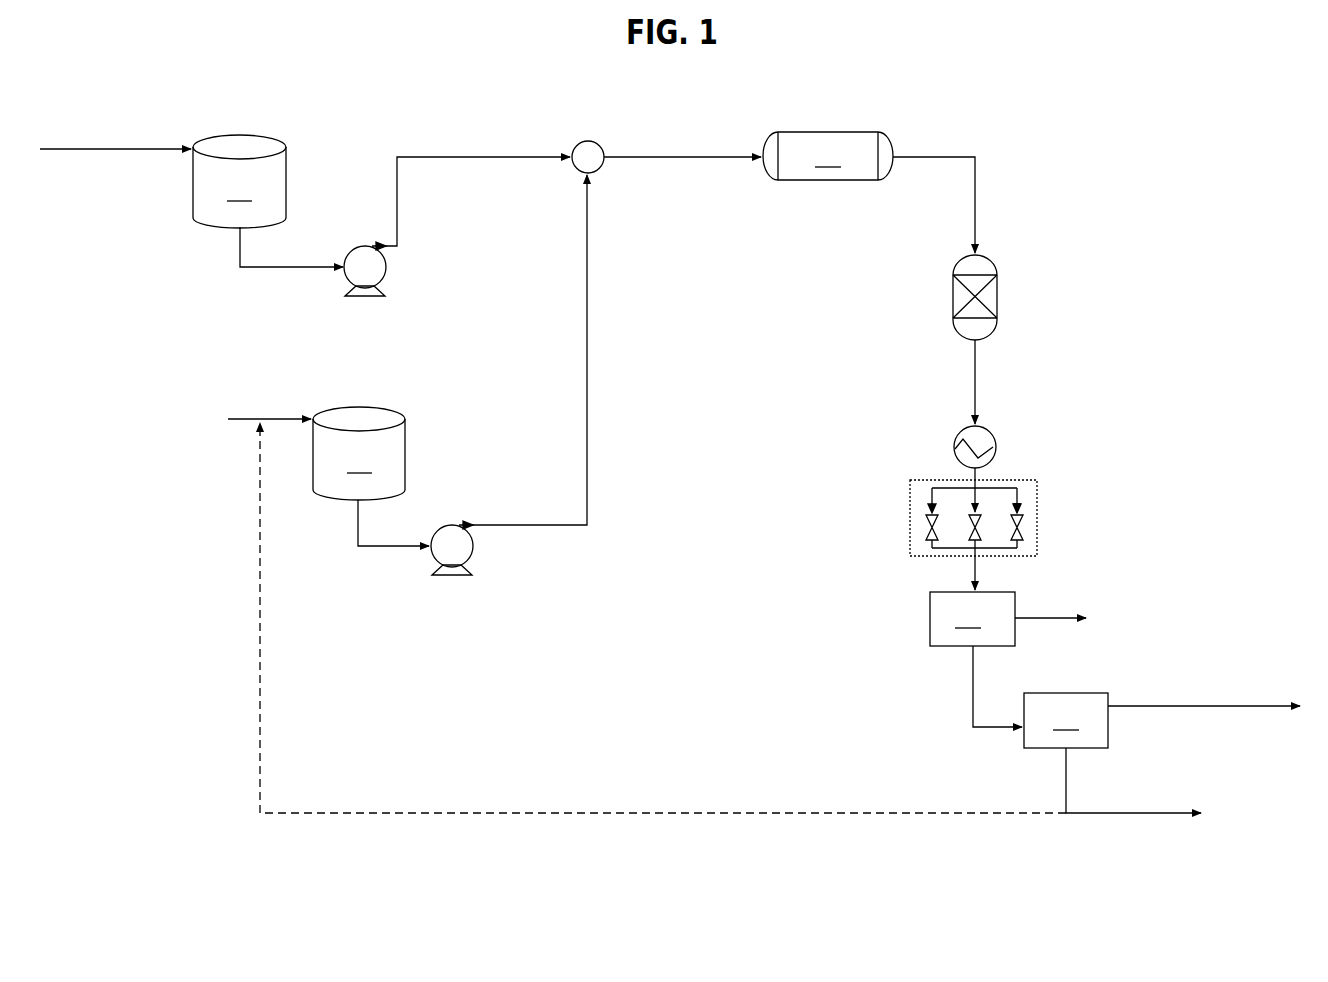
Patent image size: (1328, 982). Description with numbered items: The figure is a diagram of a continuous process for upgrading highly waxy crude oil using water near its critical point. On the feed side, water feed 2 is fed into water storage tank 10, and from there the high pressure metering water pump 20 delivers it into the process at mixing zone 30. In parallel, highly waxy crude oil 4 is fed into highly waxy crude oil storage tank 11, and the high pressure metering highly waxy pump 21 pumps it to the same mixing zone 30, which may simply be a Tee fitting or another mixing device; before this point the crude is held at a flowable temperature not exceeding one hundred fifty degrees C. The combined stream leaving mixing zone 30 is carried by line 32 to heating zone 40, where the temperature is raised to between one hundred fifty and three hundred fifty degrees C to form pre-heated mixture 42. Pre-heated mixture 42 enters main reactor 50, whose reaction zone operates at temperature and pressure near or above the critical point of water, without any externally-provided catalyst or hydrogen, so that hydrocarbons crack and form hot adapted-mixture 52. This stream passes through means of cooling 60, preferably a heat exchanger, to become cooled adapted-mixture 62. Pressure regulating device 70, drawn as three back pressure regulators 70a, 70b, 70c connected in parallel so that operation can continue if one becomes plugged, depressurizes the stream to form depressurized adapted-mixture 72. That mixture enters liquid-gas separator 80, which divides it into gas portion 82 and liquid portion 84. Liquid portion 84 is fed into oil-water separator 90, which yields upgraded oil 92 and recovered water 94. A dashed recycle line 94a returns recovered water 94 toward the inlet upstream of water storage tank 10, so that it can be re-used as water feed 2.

The water feed 2 is at (255, 420).
The highly waxy crude oil 4 is at (137, 149).
The water storage tank 10 is at (359, 453).
The highly waxy crude oil storage tank 11 is at (239, 181).
The high pressure metering water pump 20 is at (473, 547).
The high pressure metering highly waxy pump 21 is at (366, 245).
The mixing zone 30 is at (593, 141).
The mixed stream 32 is at (718, 156).
The heating zone 40 is at (828, 156).
The pre-heated mixture 42 is at (928, 156).
The main reactor 50 is at (953, 266).
The hot adapted-mixture 52 is at (977, 395).
The means of cooling 60 is at (961, 430).
The cooled adapted-mixture 62 is at (978, 472).
The pressure regulating device 70 is at (986, 488).
The back pressure regulator 70a is at (926, 523).
The back pressure regulator 70b is at (981, 524).
The back pressure regulator 70c is at (1024, 524).
The depressurized adapted-mixture 72 is at (973, 573).
The liquid-gas separator 80 is at (972, 619).
The gas portion 82 is at (1022, 617).
The liquid portion 84 is at (975, 716).
The oil-water separator 90 is at (1066, 720).
The upgraded oil 92 is at (1120, 705).
The recovered water 94 is at (1067, 810).
The recycle stream line 94a is at (803, 812).